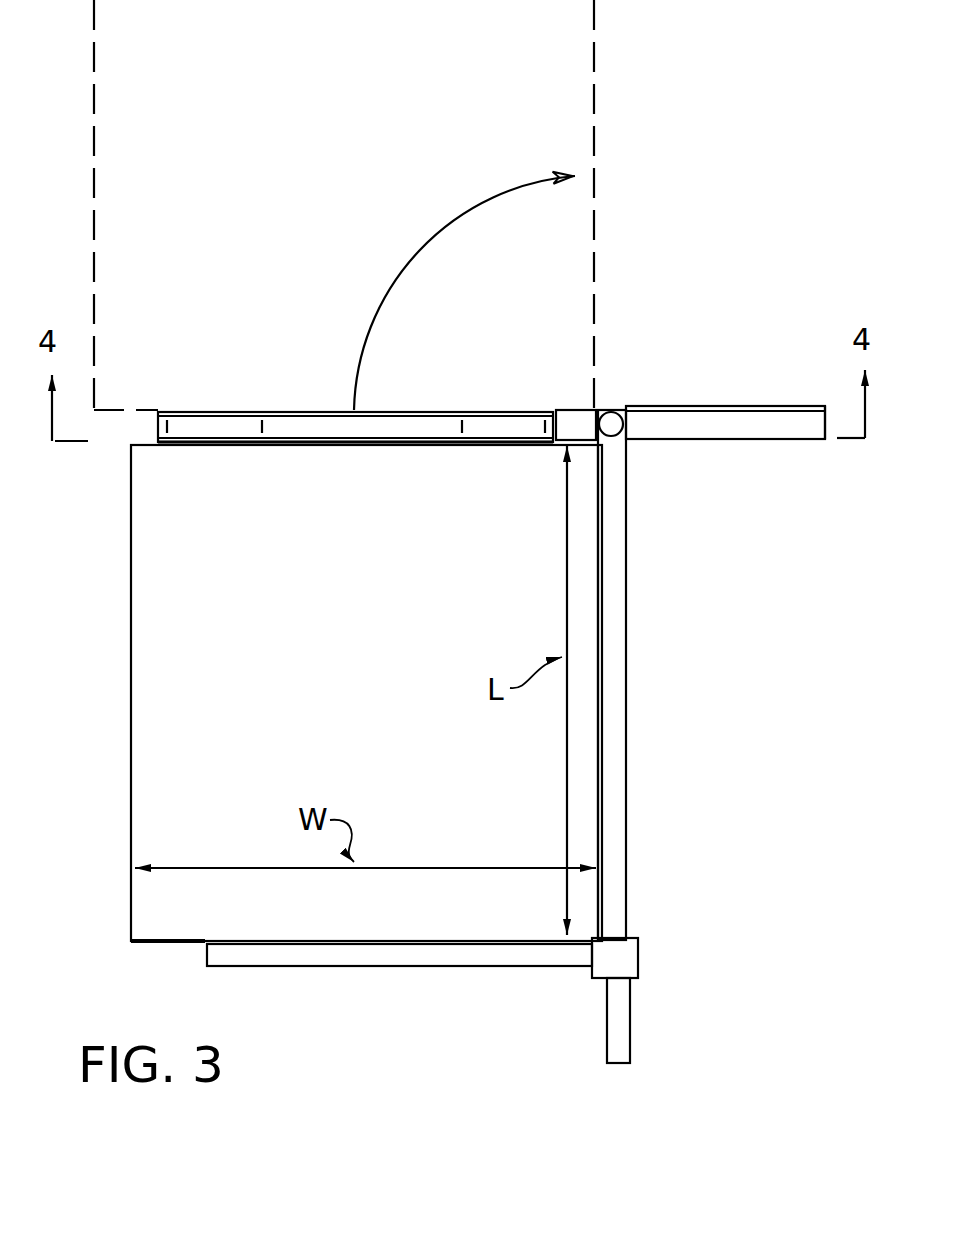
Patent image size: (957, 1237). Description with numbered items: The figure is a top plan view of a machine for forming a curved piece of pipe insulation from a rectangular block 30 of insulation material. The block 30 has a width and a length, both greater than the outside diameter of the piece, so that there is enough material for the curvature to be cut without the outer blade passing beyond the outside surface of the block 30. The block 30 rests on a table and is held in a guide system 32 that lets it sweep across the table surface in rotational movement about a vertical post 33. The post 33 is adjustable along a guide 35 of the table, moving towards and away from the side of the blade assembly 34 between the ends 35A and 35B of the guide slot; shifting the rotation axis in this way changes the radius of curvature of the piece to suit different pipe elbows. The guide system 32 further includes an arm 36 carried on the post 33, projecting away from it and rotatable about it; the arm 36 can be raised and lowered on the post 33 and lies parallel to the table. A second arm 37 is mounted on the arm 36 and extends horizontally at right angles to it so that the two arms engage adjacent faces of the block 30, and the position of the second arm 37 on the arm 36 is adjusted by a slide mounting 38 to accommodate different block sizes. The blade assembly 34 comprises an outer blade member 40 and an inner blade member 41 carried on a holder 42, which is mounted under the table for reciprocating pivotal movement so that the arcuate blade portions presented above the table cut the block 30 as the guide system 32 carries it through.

The block 30 is at (122, 648).
The guide system 32 is at (670, 814).
The vertical post 33 is at (636, 450).
The blade assembly 34 is at (318, 382).
The guide 35 is at (675, 416).
The end of guide slot 35A is at (572, 425).
The end of guide slot 35B is at (808, 420).
The arm 36 is at (618, 660).
The second arm 37 is at (436, 953).
The slide mounting 38 is at (650, 958).
The outer blade member 40 is at (152, 427).
The inner blade member 41 is at (250, 427).
The holder 42 is at (274, 447).